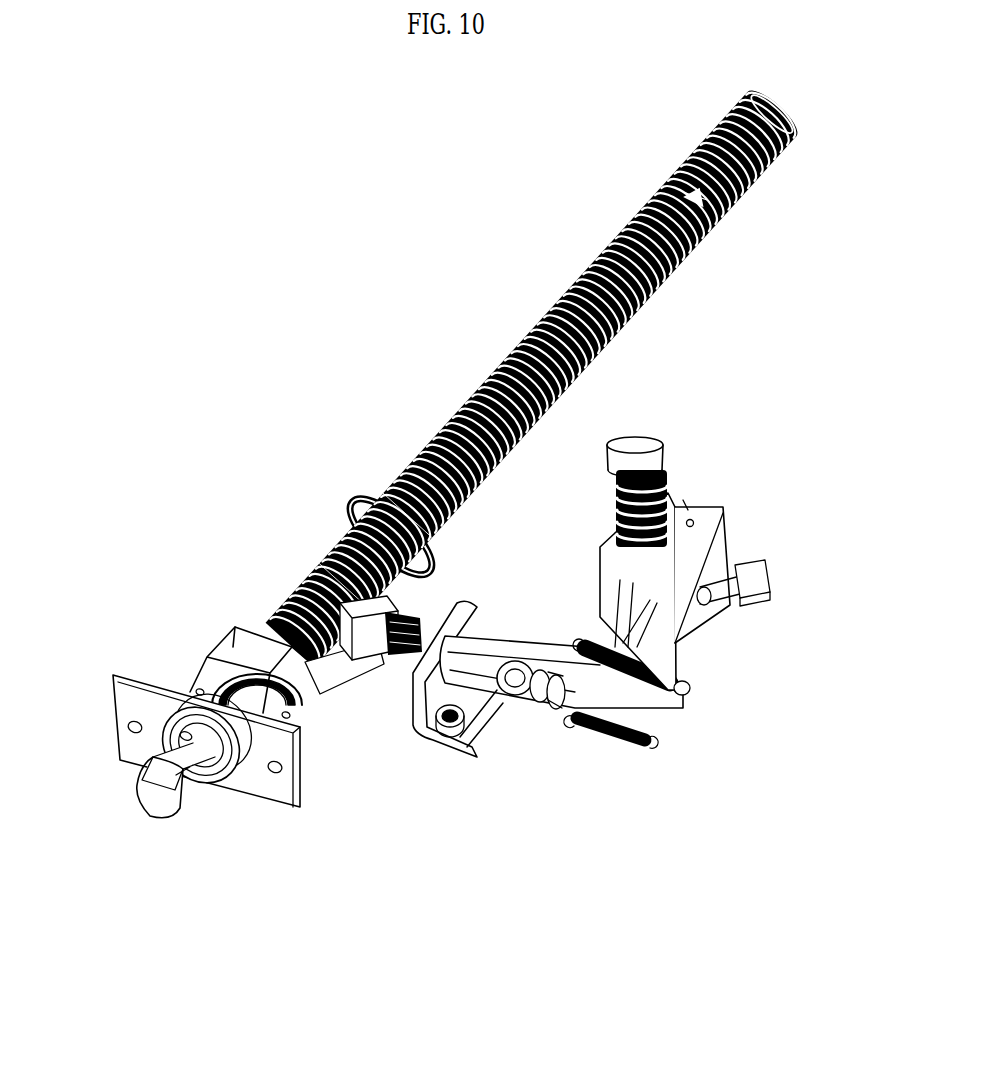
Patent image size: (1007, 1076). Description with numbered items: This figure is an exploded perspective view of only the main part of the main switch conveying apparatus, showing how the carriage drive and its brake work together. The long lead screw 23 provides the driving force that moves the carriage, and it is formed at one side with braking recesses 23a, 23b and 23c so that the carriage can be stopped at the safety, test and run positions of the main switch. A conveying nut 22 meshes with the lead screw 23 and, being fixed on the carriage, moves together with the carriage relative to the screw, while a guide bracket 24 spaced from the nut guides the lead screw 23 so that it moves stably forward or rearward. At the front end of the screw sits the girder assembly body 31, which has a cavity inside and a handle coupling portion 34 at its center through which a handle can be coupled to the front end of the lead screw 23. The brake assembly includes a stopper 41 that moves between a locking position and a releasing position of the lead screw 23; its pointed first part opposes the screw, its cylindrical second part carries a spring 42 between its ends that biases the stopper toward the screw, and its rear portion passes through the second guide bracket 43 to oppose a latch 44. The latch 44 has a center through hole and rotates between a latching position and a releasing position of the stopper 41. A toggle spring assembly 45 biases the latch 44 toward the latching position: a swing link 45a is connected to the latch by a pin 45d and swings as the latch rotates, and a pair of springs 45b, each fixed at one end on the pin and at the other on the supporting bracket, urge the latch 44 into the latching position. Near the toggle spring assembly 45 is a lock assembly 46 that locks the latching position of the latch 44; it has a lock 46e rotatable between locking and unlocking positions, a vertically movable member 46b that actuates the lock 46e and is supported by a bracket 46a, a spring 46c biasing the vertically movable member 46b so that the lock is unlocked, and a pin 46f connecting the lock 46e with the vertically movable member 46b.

The conveying nut 22 is at (233, 640).
The lead screw 23 is at (583, 262).
The braking recess 23a is at (332, 596).
The braking recess 23b is at (382, 505).
The braking recess 23c is at (720, 210).
The guide bracket 24 is at (357, 530).
The body 31 is at (279, 787).
The handle coupling portion 34 is at (137, 770).
The stopper 41 is at (362, 668).
The spring 42 is at (437, 632).
The second guide bracket 43 is at (441, 735).
The latch 44 is at (522, 655).
The toggle spring assembly 45 is at (672, 753).
The swing link 45a is at (652, 700).
The spring 45b is at (623, 740).
The pin 45d is at (527, 700).
The lock assembly 46 is at (741, 527).
The bracket 46a is at (698, 497).
The vertically movable member 46b is at (638, 443).
The spring 46c is at (687, 505).
The lock 46e is at (690, 642).
The pin 46f is at (748, 598).